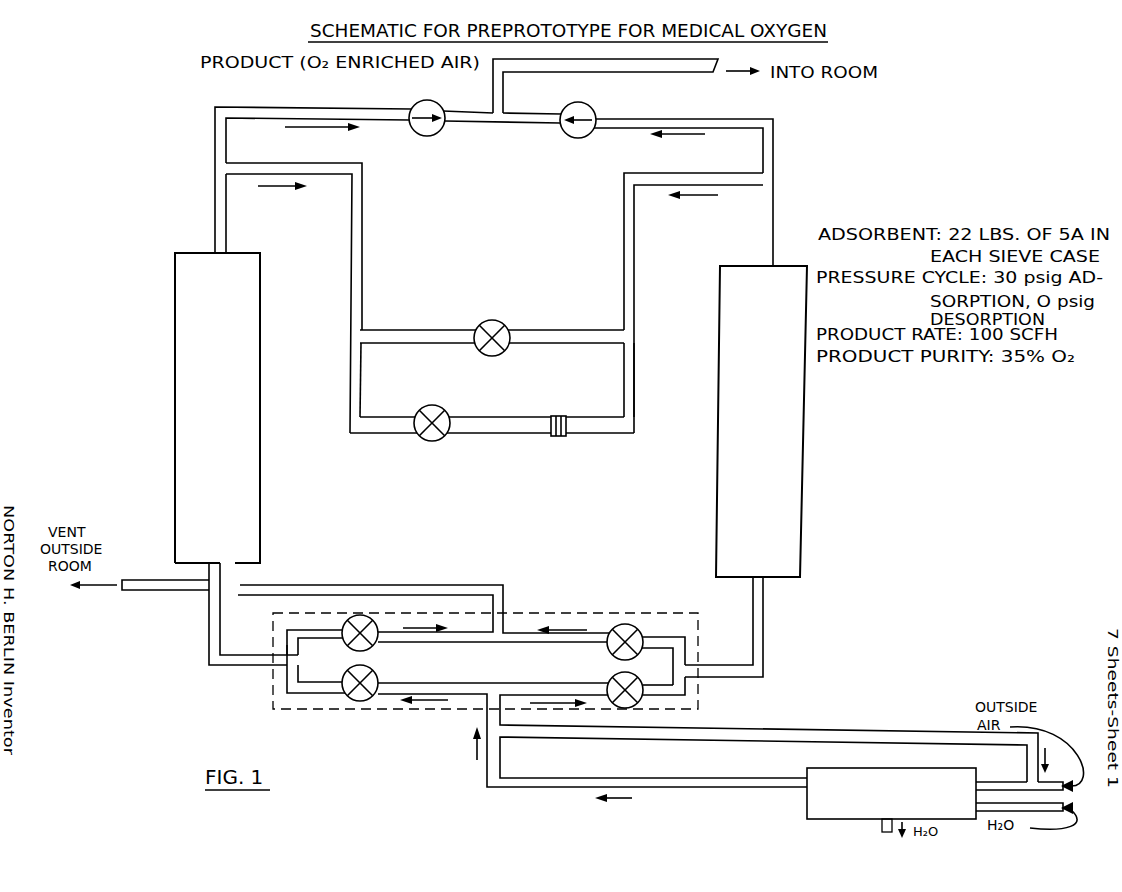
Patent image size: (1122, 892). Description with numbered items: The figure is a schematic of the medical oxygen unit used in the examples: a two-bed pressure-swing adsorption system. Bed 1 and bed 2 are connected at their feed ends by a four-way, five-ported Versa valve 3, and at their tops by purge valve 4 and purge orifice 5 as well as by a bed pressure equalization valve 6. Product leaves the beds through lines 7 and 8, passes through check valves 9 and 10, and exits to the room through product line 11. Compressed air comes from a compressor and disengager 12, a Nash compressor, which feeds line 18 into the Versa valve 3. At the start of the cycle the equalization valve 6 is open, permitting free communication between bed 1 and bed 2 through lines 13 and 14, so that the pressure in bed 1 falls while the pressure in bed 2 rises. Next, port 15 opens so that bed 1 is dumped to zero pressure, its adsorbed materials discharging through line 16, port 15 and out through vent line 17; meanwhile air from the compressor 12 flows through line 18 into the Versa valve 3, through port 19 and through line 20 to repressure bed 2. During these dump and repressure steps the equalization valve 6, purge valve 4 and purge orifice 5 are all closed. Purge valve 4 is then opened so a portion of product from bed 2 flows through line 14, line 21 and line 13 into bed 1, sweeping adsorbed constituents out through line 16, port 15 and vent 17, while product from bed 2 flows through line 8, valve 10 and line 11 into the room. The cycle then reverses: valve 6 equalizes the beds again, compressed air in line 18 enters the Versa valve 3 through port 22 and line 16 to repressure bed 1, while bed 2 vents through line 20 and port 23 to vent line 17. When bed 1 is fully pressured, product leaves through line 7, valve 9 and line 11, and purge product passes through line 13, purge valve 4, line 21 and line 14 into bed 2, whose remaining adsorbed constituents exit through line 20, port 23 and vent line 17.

The bed 1 is at (221, 442).
The bed 2 is at (750, 452).
The Versa valve 3 is at (365, 708).
The purge valve 4 is at (437, 439).
The purge orifice 5 is at (560, 438).
The bed pressure equalization valve 6 is at (500, 321).
The line 7 is at (334, 109).
The line 8 is at (722, 117).
The check valve 9 is at (431, 101).
The check valve 10 is at (583, 103).
The product line 11 is at (499, 80).
The compressor and disengager 12 is at (832, 768).
The line 13 is at (363, 212).
The line 14 is at (622, 204).
The port 15 is at (371, 647).
The line 16 is at (262, 658).
The vent line 17 is at (352, 590).
The line 18 is at (552, 782).
The port 19 is at (610, 680).
The line 20 is at (763, 625).
The line 21 is at (634, 355).
The port 22 is at (372, 672).
The port 23 is at (608, 660).